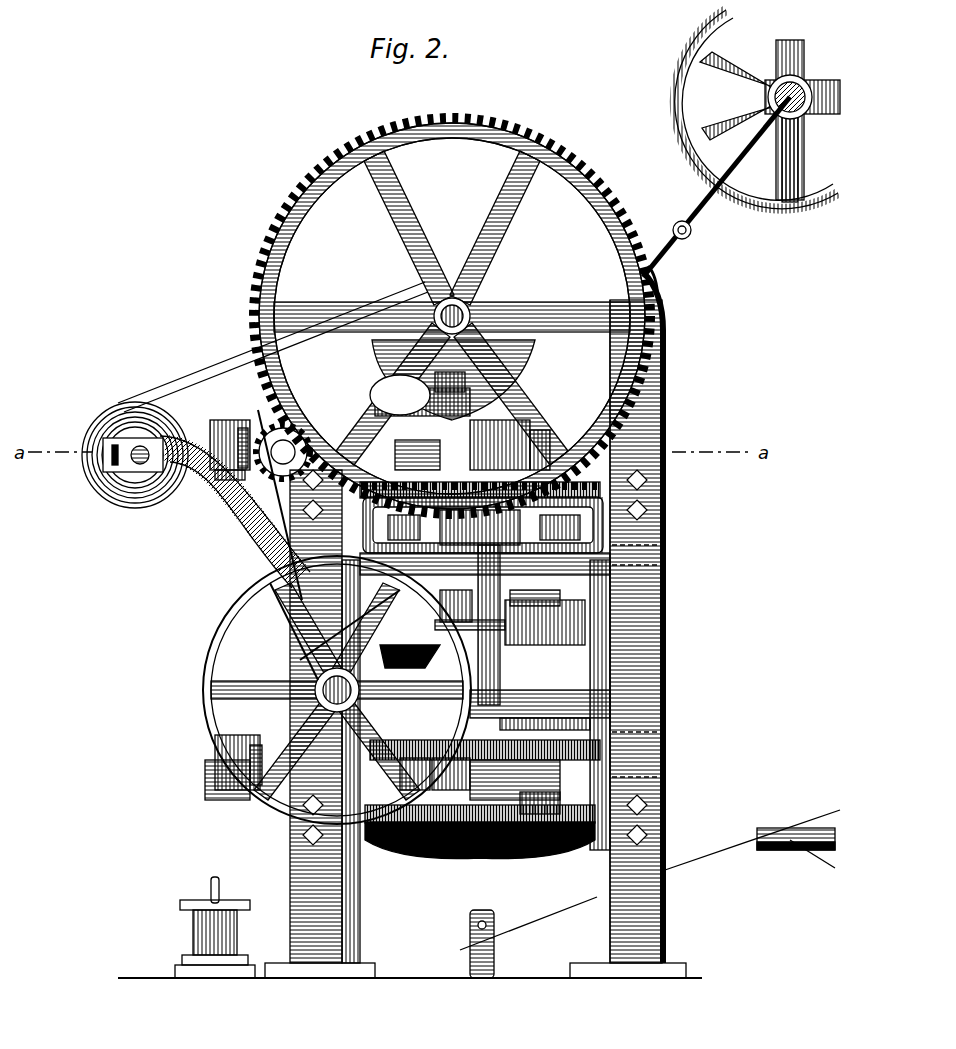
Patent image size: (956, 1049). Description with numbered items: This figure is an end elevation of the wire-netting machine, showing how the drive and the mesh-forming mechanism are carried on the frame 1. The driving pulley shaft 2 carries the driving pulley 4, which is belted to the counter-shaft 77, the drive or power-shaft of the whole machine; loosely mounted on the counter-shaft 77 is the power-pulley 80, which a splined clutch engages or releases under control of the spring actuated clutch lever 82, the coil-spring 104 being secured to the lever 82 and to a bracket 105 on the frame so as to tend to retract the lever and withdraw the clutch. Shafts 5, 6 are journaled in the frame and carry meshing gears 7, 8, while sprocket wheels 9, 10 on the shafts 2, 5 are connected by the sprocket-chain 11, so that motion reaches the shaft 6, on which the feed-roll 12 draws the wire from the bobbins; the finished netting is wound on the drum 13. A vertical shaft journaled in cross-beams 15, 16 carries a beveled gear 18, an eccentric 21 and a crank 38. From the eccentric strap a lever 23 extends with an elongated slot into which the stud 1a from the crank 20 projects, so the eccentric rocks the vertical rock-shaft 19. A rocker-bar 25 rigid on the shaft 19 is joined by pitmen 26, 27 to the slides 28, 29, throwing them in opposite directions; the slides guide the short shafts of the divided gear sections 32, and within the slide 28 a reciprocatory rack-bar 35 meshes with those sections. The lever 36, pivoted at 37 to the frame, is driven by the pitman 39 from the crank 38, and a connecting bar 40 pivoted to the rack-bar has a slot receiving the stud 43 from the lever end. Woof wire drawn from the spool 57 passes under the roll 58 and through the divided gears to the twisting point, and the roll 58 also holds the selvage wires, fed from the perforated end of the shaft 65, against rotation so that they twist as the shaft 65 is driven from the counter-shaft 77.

The frame 1 is at (662, 600).
The stud 1a is at (522, 600).
The driving pulley shaft 2 is at (337, 690).
The driving pulley 4 is at (210, 645).
The shaft 5 is at (272, 470).
The shaft 6 is at (470, 306).
The gear 7 is at (298, 380).
The gear 8 is at (262, 262).
The sprocket wheel 9 is at (282, 622).
The sprocket wheel 10 is at (270, 425).
The sprocket-chain 11 is at (262, 540).
The feed-roll 12 is at (452, 298).
The drum 13 is at (110, 485).
The cross-beam 15 is at (280, 505).
The cross-beam 16 is at (300, 848).
The beveled gear 18 is at (420, 660).
The vertical rock-shaft 19 is at (502, 672).
The crank 20 is at (548, 645).
The eccentric 21 is at (390, 625).
The lever 23 is at (455, 604).
The rocker-bar 25 is at (663, 548).
The pitman 26 is at (420, 538).
The pitman 27 is at (663, 568).
The slide 28 is at (430, 880).
The slide 29 is at (535, 465).
The gear section 32 is at (500, 880).
The rack-bar 35 is at (490, 460).
The lever 36 is at (215, 420).
The pivot 37 is at (242, 425).
The crank 38 is at (360, 380).
The pitman 39 is at (392, 380).
The connecting bar 40 is at (500, 380).
The stud 43 is at (452, 392).
The spool 57 is at (200, 918).
The roll 58 is at (478, 928).
The shaft 65 is at (788, 852).
The counter-shaft 77 is at (806, 126).
The power-pulley 80 is at (684, 88).
The clutch lever 82 is at (720, 212).
The coil-spring 104 is at (692, 234).
The bracket 105 is at (660, 308).